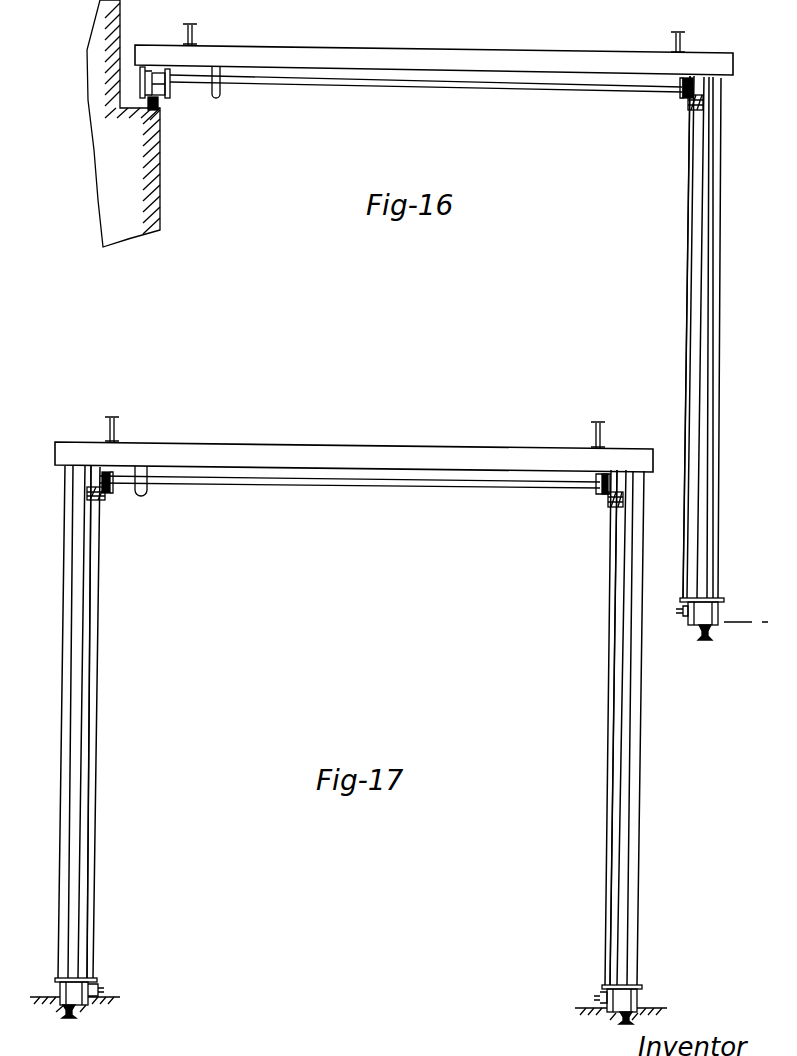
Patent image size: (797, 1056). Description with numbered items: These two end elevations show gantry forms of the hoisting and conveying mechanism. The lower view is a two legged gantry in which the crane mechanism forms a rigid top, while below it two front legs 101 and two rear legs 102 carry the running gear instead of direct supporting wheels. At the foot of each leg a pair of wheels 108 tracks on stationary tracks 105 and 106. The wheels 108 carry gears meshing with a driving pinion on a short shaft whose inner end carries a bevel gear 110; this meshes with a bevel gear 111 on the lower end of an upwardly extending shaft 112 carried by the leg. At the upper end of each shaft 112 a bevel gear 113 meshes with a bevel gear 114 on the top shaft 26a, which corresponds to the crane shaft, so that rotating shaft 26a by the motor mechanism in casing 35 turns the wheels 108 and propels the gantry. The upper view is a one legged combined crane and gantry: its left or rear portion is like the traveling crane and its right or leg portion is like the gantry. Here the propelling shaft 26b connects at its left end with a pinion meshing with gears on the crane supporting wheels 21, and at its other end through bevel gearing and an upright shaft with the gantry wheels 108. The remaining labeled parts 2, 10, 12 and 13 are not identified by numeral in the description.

In FIG. 16, the wall ledge / supporting wall 2 is at (156, 107).
In FIG. 16, the overhead beam 10 is at (434, 60).
In FIG. 17, the overhead beam 10 is at (354, 457).
In FIG. 16, the I-beam rail 12 is at (684, 39).
In FIG. 17, the I-beam rail 12 is at (604, 430).
In FIG. 16, the I-beam rail 13 is at (196, 31).
In FIG. 17, the I-beam rail 13 is at (118, 425).
In FIG. 16, the supporting wheels 21 is at (170, 95).
In FIG. 17, the shaft 26a is at (422, 489).
In FIG. 16, the propelling shaft 26b is at (498, 91).
In FIG. 16, the motor mechanism casing 35 is at (220, 95).
In FIG. 17, the motor mechanism casing 35 is at (147, 489).
In FIG. 16, the front legs 101 is at (705, 459).
In FIG. 17, the front legs 101 is at (640, 746).
In FIG. 17, the rear legs 102 is at (62, 752).
In FIG. 16, the stationary track 105 is at (708, 641).
In FIG. 17, the stationary track 105 is at (624, 1025).
In FIG. 17, the stationary track 106 is at (70, 1019).
In FIG. 16, the supporting wheels 108 is at (710, 608).
In FIG. 17, the supporting wheels 108 is at (60, 988).
In FIG. 16, the bevel gear 110 is at (688, 622).
In FIG. 17, the bevel gear 110 is at (120, 997).
In FIG. 16, the bevel gear 111 is at (676, 611).
In FIG. 17, the bevel gear 111 is at (104, 989).
In FIG. 16, the upwardly extending shaft 112 is at (687, 278).
In FIG. 17, the upwardly extending shaft 112 is at (97, 820).
In FIG. 16, the bevel gear 113 is at (693, 110).
In FIG. 17, the bevel gear 113 is at (100, 500).
In FIG. 16, the bevel gear 114 is at (680, 95).
In FIG. 17, the bevel gear 114 is at (108, 484).